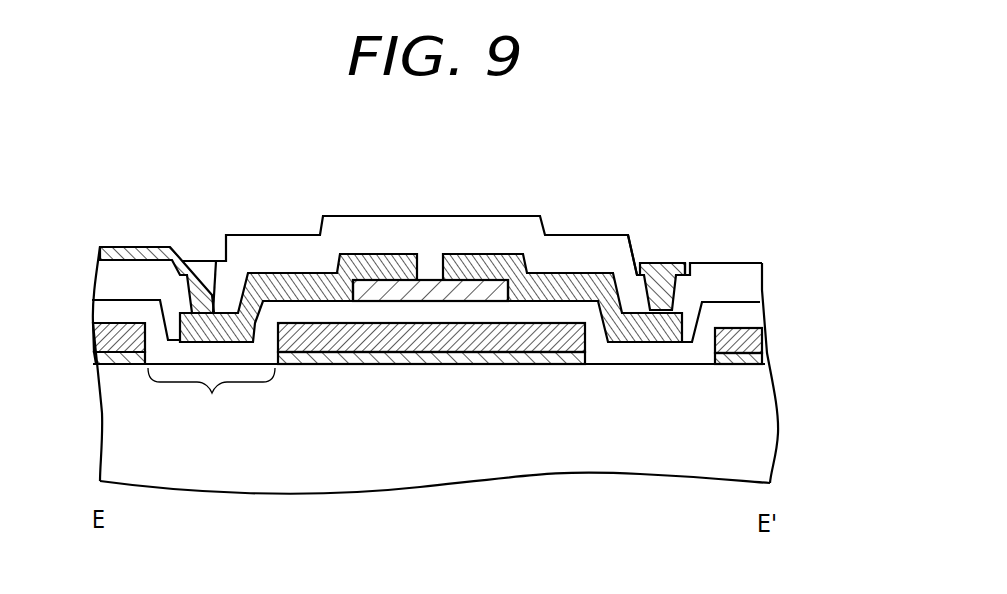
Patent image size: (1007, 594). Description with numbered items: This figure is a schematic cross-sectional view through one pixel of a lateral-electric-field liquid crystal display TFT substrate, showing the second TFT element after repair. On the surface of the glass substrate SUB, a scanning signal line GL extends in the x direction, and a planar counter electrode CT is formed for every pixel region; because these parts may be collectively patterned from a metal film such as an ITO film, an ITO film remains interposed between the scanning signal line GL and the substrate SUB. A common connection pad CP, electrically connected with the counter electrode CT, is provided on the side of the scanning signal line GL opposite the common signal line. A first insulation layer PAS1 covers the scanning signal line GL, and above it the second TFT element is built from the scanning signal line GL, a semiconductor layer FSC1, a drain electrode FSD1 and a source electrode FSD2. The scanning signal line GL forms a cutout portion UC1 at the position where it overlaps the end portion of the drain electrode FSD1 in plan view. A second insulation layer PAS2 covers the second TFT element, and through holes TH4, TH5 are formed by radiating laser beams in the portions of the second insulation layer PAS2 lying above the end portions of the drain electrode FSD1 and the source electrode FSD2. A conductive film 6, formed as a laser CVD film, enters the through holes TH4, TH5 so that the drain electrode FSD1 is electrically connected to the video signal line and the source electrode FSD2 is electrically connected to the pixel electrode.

The conductive film 6 is at (148, 245).
The through hole TH4 is at (218, 293).
The through hole TH5 is at (682, 296).
The drain electrode FSD1 is at (383, 253).
The source electrode FSD2 is at (497, 253).
The semiconductor layer FSC1 is at (430, 290).
The second insulation layer PAS2 is at (586, 247).
The first insulation layer PAS1 is at (642, 358).
The scanning signal line GL is at (93, 338).
The counter electrode CT is at (762, 358).
The common connection pad CP is at (762, 342).
The cutout portion UC1 is at (211, 399).
The glass substrate SUB is at (297, 465).